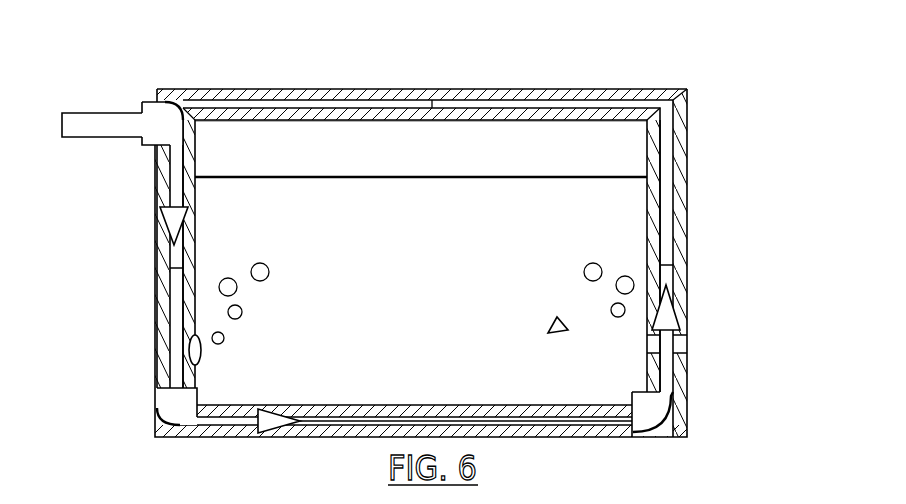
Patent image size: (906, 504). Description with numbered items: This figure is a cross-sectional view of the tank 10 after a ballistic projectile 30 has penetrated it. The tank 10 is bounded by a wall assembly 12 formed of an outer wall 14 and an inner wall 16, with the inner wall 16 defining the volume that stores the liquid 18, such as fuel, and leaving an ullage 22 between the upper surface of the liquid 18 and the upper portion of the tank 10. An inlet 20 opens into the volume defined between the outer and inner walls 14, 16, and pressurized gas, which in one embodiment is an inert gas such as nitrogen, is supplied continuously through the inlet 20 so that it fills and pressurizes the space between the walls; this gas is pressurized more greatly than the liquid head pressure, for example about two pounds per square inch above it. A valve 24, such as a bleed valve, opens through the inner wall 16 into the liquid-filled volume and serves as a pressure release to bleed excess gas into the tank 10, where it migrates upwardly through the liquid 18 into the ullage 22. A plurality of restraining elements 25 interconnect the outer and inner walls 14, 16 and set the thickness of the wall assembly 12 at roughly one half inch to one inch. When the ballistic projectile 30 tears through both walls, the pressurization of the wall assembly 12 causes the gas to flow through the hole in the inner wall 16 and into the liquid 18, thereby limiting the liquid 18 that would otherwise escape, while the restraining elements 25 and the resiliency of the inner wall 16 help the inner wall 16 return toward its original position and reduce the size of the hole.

The tank 10 is at (735, 89).
The wall assembly 12 is at (667, 138).
The outer wall 14 is at (633, 89).
The inner wall 16 is at (549, 108).
The liquid 18 is at (434, 306).
The inlet 20 is at (102, 130).
The ullage 22 is at (444, 158).
The valve 24 is at (189, 349).
The restraining elements 25 is at (172, 283).
The ballistic projectile 30 is at (557, 315).